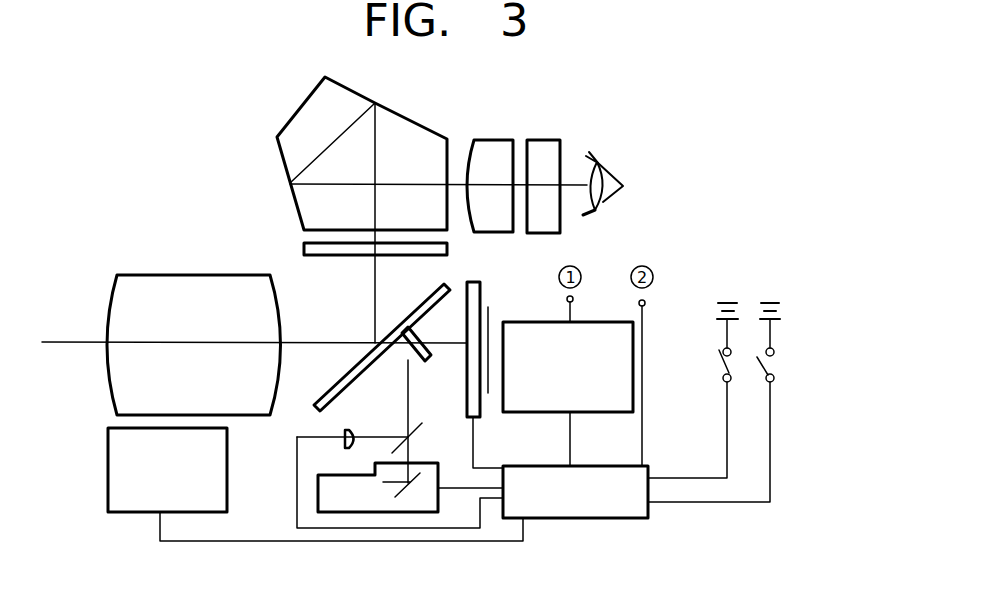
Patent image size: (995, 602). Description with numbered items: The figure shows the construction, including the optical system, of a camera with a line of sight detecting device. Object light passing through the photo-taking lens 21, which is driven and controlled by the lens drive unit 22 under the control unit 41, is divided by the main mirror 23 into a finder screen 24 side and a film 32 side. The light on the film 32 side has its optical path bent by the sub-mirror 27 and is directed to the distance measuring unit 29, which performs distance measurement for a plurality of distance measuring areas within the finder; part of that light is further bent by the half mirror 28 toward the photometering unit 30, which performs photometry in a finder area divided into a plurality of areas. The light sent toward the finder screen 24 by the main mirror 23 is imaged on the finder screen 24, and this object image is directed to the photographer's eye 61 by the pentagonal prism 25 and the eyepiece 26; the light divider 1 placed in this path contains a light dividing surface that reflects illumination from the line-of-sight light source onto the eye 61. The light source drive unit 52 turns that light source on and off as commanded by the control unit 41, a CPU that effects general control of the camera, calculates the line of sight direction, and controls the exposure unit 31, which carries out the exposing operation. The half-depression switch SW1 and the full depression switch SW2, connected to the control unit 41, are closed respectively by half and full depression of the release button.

The light divider 1 is at (540, 150).
The photo-taking lens 21 is at (100, 380).
The lens drive unit 22 is at (108, 478).
The main mirror 23 is at (314, 408).
The finder screen 24 is at (305, 249).
The pentagonal prism 25 is at (283, 155).
The eyepiece 26 is at (495, 147).
The sub-mirror 27 is at (428, 358).
The half mirror 28 is at (410, 437).
The distance measuring unit 29 is at (360, 508).
The photometering unit 30 is at (355, 437).
The exposure unit 31 is at (483, 395).
The film 32 is at (491, 322).
The control unit 41 is at (553, 518).
The light source drive unit 52 is at (598, 413).
The eye 61 is at (605, 207).
The half-depression switch SW1 is at (718, 353).
The full depression switch SW2 is at (778, 360).